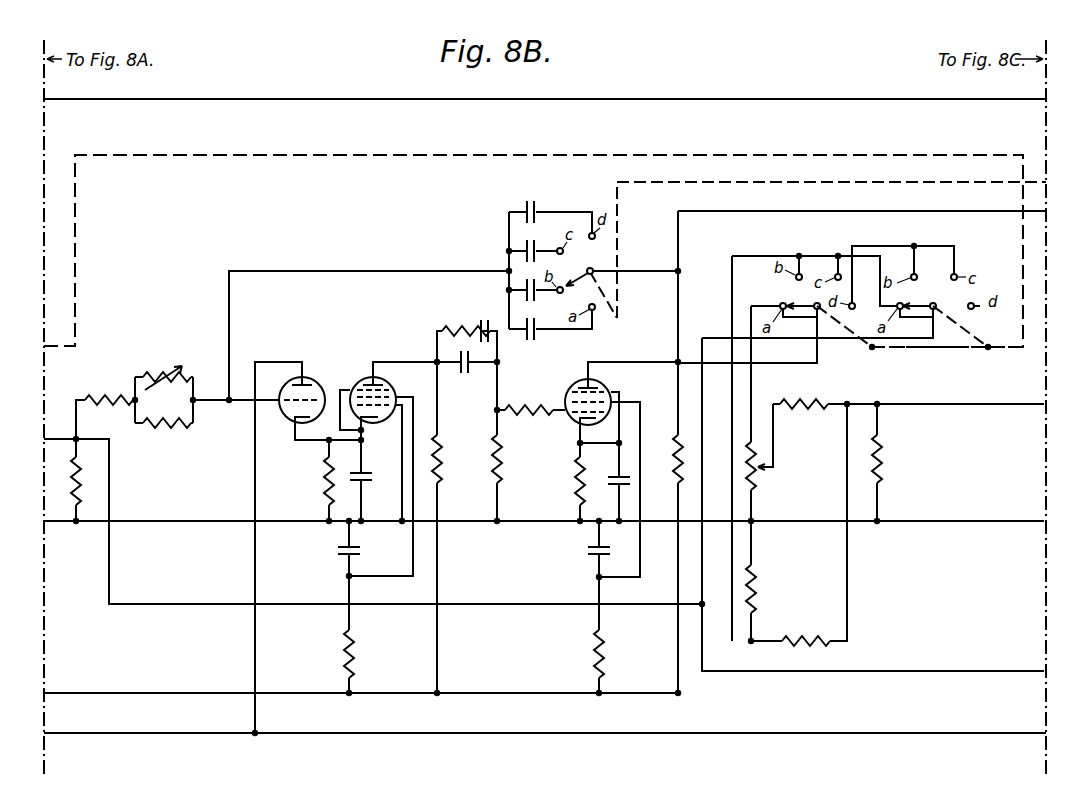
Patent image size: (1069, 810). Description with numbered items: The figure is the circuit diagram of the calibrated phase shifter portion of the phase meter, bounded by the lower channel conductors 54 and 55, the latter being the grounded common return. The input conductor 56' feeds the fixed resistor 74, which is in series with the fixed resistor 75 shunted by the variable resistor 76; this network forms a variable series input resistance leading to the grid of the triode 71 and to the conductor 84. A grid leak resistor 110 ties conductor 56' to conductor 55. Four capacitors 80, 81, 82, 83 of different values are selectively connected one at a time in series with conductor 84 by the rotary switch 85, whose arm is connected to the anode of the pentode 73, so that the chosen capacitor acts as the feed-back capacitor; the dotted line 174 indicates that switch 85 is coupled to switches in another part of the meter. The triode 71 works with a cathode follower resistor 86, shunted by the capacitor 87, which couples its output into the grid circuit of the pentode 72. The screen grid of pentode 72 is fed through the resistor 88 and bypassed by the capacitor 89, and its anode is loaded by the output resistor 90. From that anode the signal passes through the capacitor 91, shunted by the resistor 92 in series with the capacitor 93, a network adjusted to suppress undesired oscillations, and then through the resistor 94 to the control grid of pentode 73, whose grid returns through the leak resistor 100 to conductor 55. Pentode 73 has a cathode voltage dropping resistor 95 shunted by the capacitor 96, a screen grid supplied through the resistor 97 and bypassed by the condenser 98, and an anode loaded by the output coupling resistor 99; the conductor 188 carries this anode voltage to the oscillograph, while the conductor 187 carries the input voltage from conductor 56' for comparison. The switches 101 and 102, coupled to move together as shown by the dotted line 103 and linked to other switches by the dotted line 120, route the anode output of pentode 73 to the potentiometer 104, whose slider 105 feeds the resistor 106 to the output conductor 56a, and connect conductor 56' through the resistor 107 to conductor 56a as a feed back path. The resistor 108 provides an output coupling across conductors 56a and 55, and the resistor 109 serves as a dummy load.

The lower channel conductor 54 is at (198, 98).
The dotted line 120 is at (697, 156).
The dotted line 174 is at (900, 184).
The conductor 188 is at (957, 212).
The conductor 84 is at (370, 271).
The capacitor 83 is at (535, 209).
The capacitor 82 is at (539, 245).
The capacitor 81 is at (539, 299).
The capacitor 80 is at (540, 337).
The rotary switch 85 is at (575, 270).
The resistor 92 is at (441, 327).
The capacitor 93 is at (485, 318).
The capacitor 91 is at (464, 385).
The triode 71 is at (311, 378).
The pentode 72 is at (390, 385).
The pentode 73 is at (606, 388).
The resistor 94 is at (528, 404).
The fixed resistor 74 is at (103, 395).
The variable resistor 76 is at (153, 369).
The fixed resistor 75 is at (172, 430).
The input conductor 56' is at (373, 503).
The grid leak resistor 110 is at (83, 478).
The grounded conductor 55 is at (53, 523).
The cathode follower resistor 86 is at (325, 474).
The capacitor 87 is at (376, 473).
The bypass capacitor 89 is at (365, 551).
The resistor 88 is at (356, 659).
The output resistor 90 is at (455, 451).
The leak resistor 100 is at (505, 458).
The voltage dropping resistor 95 is at (574, 483).
The capacitor 96 is at (610, 480).
The bypass condenser 98 is at (584, 548).
The resistor 97 is at (593, 657).
The output coupling resistor 99 is at (672, 474).
The conductor 187 is at (980, 672).
The switch 101 is at (810, 304).
The switch 102 is at (918, 304).
The dotted line 103 is at (935, 348).
The potentiometer 104 is at (758, 486).
The slider 105 is at (768, 470).
The resistor 106 is at (813, 411).
The output conductor 56a is at (983, 404).
The resistor 108 is at (889, 471).
The resistor 109 is at (761, 594).
The resistor 107 is at (799, 638).